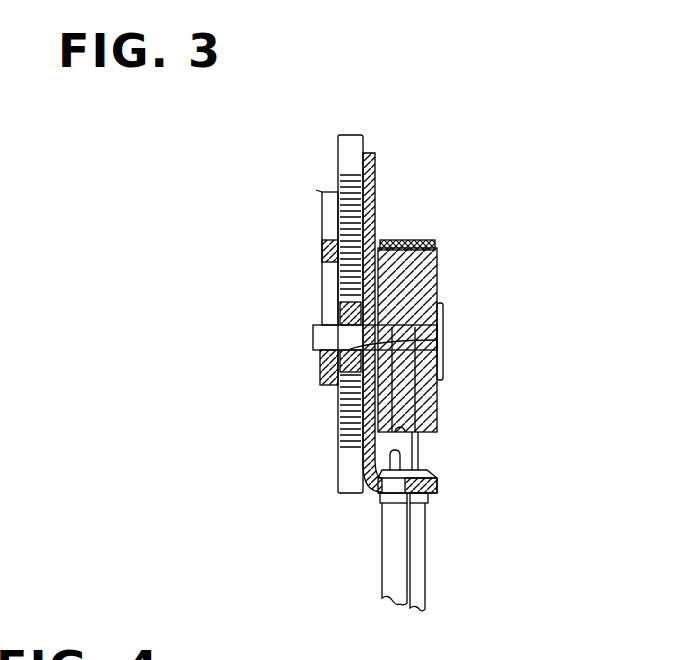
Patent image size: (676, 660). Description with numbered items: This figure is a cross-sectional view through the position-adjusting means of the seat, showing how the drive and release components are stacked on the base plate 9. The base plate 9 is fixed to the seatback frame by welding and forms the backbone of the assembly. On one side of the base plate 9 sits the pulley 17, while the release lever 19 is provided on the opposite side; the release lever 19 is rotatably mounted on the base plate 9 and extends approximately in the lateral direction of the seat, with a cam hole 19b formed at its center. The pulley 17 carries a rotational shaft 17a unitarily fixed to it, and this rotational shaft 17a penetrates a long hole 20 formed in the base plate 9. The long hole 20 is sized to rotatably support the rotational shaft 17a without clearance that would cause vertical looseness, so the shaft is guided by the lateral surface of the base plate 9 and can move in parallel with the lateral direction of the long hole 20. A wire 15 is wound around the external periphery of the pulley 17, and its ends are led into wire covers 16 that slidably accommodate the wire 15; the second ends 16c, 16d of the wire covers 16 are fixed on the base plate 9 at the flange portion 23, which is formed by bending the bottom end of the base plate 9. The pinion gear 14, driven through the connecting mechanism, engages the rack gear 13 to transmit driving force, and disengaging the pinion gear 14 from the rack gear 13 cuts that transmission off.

The rack gear 13 is at (363, 136).
The base plate 9 is at (375, 178).
The cam hole 19b is at (322, 275).
The release lever 19 is at (322, 243).
The pinion gear 14 is at (320, 365).
The rotational shaft 17a is at (313, 337).
The pulley 17 is at (437, 270).
The wire 15 is at (418, 248).
The long hole 20 is at (440, 345).
The second end of wire cover 16c is at (380, 500).
The flange portion 23 is at (437, 488).
The second end of wire cover 16d is at (428, 500).
The wire cover 16 is at (392, 545).